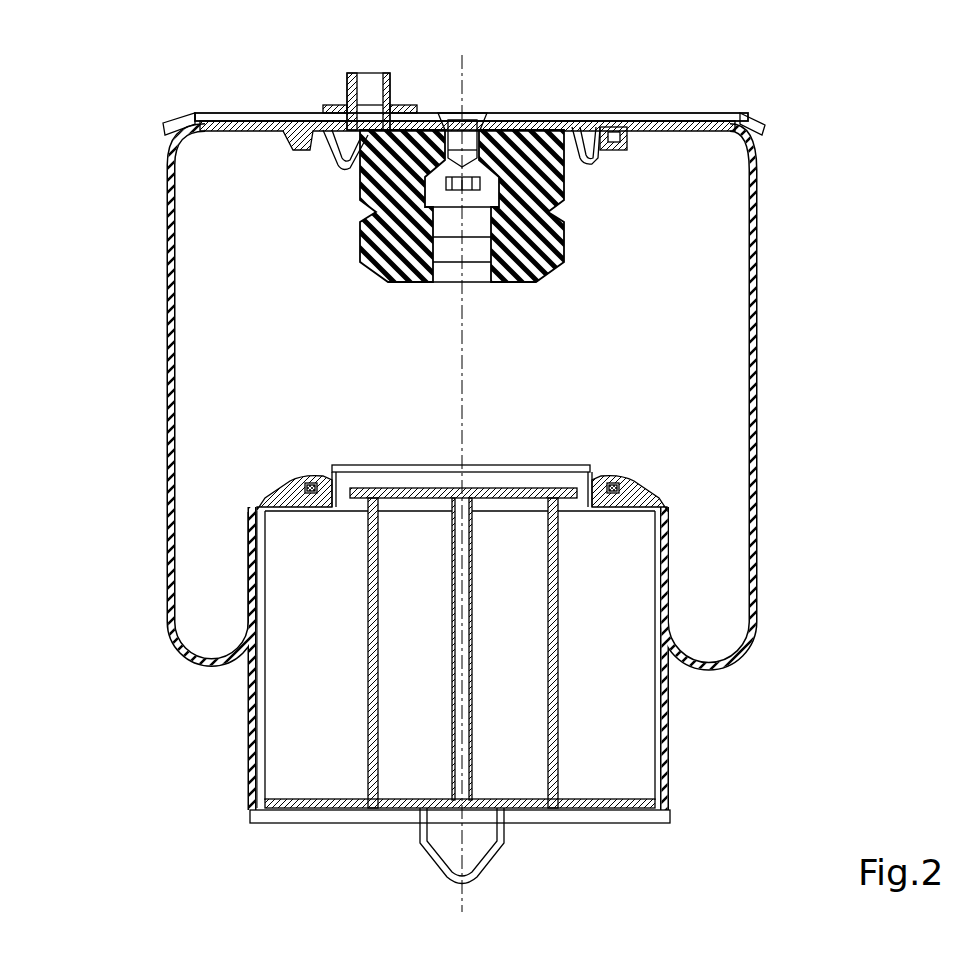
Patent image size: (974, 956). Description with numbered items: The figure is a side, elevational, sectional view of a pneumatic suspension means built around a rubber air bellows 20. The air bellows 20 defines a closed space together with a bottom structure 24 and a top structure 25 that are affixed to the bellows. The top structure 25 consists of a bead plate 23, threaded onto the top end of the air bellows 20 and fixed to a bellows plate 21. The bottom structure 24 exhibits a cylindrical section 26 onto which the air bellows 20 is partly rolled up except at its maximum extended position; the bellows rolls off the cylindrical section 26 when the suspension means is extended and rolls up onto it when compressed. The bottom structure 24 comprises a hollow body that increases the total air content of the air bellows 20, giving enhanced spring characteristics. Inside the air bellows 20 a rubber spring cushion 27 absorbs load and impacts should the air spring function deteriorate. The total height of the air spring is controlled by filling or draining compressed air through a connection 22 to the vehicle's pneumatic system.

The air bellows 20 is at (758, 380).
The bellows plate 21 is at (193, 119).
The connection 22 is at (371, 73).
The bead plate 23 is at (585, 131).
The bottom structure 24 is at (680, 745).
The top structure 25 is at (737, 106).
The cylindrical section 26 is at (245, 750).
The rubber spring cushion 27 is at (528, 152).